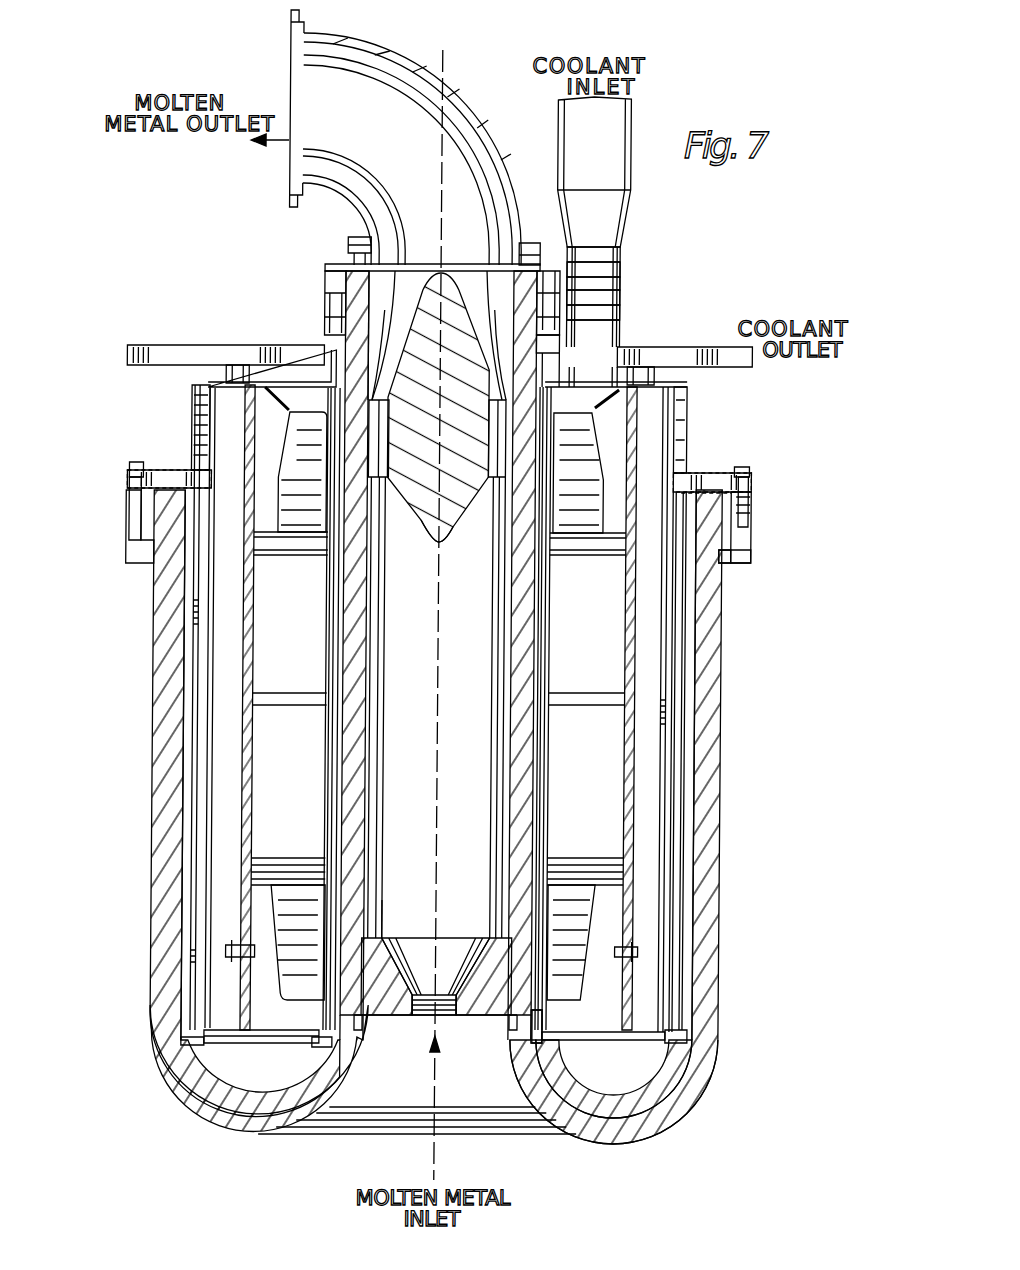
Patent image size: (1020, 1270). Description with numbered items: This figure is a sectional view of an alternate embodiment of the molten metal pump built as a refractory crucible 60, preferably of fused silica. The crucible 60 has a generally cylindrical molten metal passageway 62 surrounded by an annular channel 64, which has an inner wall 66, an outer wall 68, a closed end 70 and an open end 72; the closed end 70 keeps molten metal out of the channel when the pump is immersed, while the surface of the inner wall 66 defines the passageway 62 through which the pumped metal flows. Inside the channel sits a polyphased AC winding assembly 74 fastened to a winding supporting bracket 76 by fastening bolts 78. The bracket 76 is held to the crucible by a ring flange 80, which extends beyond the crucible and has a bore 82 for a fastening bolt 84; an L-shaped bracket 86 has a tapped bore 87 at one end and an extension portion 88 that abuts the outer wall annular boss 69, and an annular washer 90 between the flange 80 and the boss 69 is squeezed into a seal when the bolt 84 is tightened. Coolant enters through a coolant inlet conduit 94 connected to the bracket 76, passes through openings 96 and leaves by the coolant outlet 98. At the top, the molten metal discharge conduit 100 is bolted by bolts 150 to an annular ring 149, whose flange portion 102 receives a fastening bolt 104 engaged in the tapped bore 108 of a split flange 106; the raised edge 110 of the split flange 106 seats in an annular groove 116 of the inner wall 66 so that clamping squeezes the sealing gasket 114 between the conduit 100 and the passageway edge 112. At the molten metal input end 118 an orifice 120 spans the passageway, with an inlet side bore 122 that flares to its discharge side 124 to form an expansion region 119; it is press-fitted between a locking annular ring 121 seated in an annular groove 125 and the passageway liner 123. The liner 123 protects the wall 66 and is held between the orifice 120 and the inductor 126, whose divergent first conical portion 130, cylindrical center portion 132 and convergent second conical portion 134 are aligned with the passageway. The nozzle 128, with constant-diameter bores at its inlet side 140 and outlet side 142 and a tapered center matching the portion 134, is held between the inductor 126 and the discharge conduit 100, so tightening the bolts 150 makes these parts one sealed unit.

The crucible 60 is at (722, 728).
The molten metal passageway 62 is at (392, 690).
The annular channel 64 is at (220, 627).
The inner wall 66 is at (352, 808).
The outer wall 68 is at (158, 805).
The outer wall annular boss 69 is at (755, 535).
The closed end 70 is at (257, 1124).
The open end 72 is at (293, 398).
The polyphased AC winding assembly 74 is at (268, 582).
The winding supporting bracket 76 is at (220, 1040).
The fastening bolts 78 is at (223, 371).
The ring flange 80 is at (695, 470).
The bore 82 is at (752, 483).
The fastening bolt 84 is at (750, 470).
The L-shaped bracket 86 is at (740, 532).
The tapped bore 87 is at (750, 502).
The extension portion 88 is at (730, 567).
The annular washer 90 is at (707, 490).
The coolant inlet conduit 94 is at (627, 221).
The openings 96 is at (280, 443).
The coolant outlet 98 is at (653, 397).
The molten metal discharge conduit 100 is at (458, 117).
The flange portion 102 is at (575, 285).
The fastening bolt 104 is at (593, 262).
The split flange 106 is at (580, 320).
The tapped bore 108 is at (587, 303).
The raised edge 110 is at (557, 333).
The passageway edge 112 is at (335, 295).
The sealing gasket 114 is at (590, 252).
The annular groove 116 is at (557, 350).
The molten metal input end 118 is at (355, 1118).
The expansion region 119 is at (455, 980).
The orifice 120 is at (382, 1004).
The annular ring 121 is at (500, 1025).
The inlet side bore 122 is at (447, 1016).
The passageway liner 123 is at (505, 835).
The discharge side 124 is at (420, 912).
The annular groove 125 is at (527, 1008).
The inductor 126 is at (442, 546).
The nozzle 128 is at (384, 293).
The divergent first conical portion 130 is at (386, 598).
The cylindrical center portion 132 is at (392, 540).
The convergent second conical portion 134 is at (450, 297).
The inlet side 140 is at (394, 300).
The outlet side 142 is at (491, 384).
The annular ring 149 is at (645, 281).
The bolts 150 is at (345, 243).